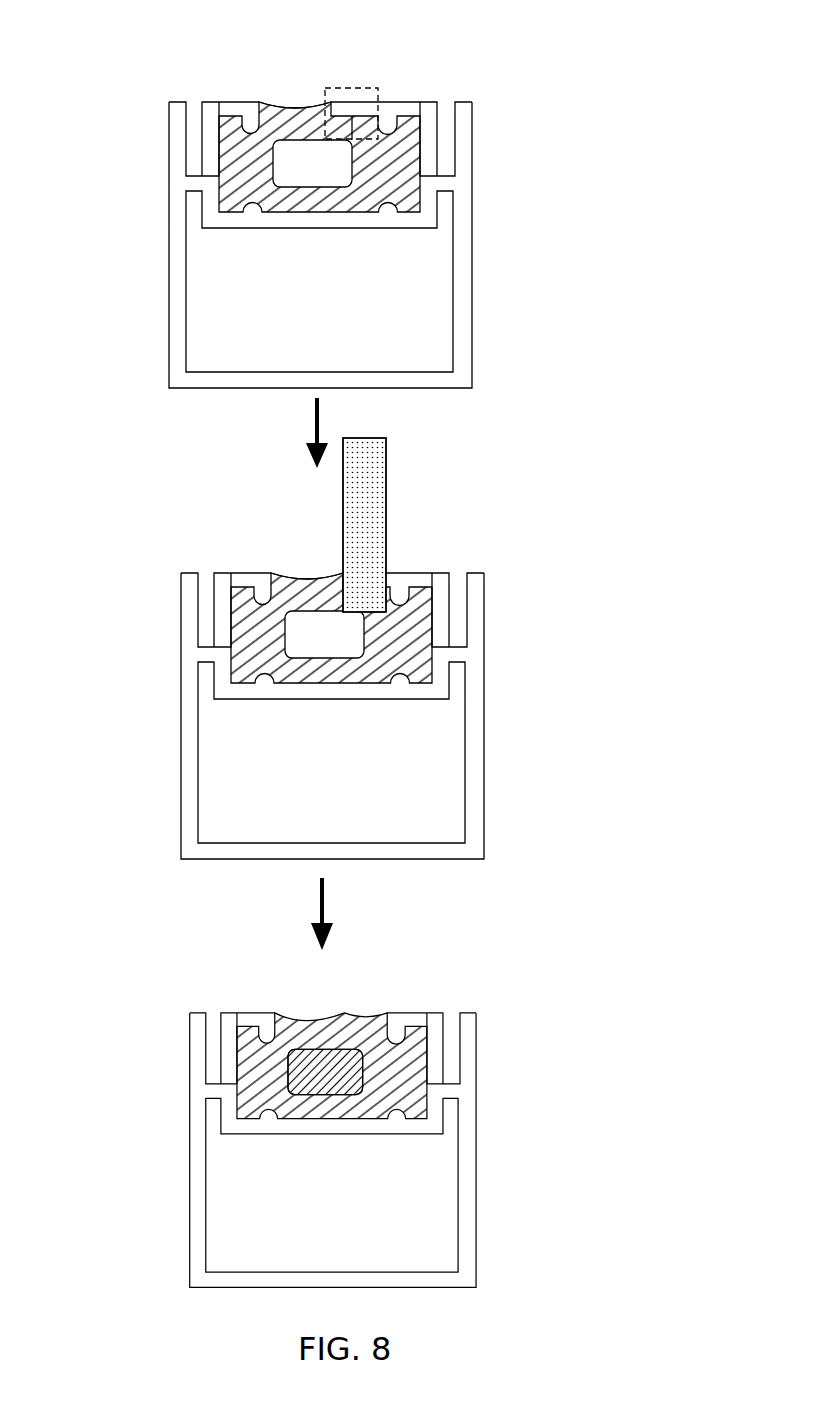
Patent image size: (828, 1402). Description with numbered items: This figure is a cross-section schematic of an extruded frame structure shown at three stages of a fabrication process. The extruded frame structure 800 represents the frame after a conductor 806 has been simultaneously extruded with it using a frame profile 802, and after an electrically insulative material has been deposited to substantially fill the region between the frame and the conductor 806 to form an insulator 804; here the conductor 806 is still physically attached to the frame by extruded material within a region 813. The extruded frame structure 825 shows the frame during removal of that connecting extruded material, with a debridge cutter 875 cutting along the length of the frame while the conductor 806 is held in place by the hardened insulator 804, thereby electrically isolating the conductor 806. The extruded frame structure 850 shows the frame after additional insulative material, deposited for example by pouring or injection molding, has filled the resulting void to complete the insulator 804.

The extruded frame structure 800 is at (516, 110).
The frame profile 802 is at (180, 291).
The insulator 804 is at (298, 104).
The conductor 806 is at (334, 150).
The region 813 is at (379, 87).
The extruded frame structure 825 is at (519, 588).
The extruded frame structure 850 is at (506, 1000).
The debridge cutter 875 is at (388, 504).